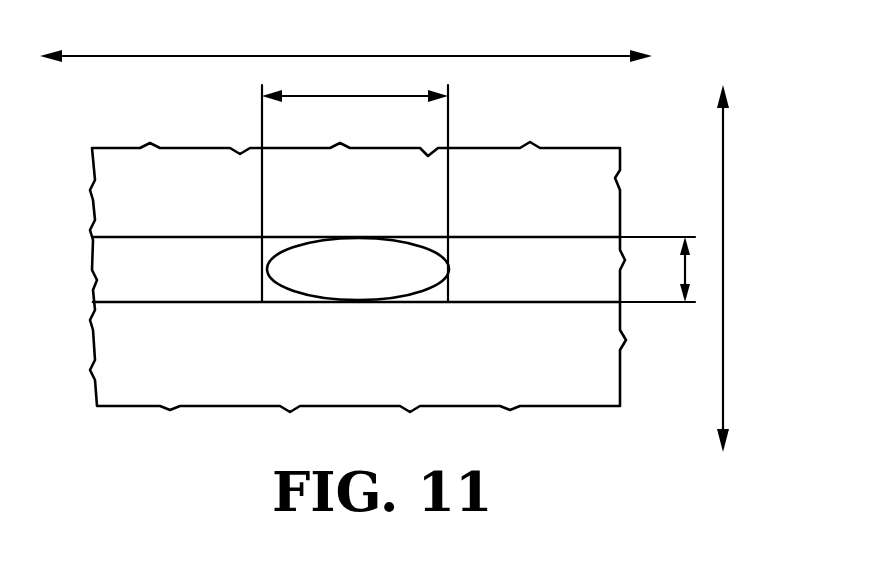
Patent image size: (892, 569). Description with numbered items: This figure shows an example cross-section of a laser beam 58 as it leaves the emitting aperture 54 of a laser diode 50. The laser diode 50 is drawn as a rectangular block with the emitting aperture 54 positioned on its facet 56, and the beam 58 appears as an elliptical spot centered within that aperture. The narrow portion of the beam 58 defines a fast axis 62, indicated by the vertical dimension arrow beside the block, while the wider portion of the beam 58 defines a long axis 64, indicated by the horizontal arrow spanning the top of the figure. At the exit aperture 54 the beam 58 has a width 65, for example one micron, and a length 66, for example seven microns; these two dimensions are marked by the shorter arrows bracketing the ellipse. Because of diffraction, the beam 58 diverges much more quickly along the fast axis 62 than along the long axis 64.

The laser diode 50 is at (565, 148).
The emitting aperture 54 is at (272, 250).
The facet 56 is at (145, 183).
The laser beam 58 is at (378, 284).
The fast axis 62 is at (724, 185).
The long axis 64 is at (467, 55).
The width 65 is at (683, 268).
The length 66 is at (350, 97).